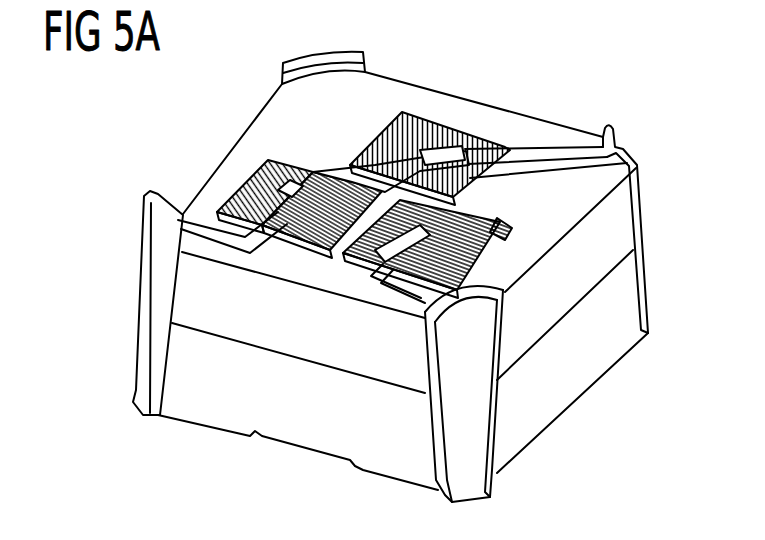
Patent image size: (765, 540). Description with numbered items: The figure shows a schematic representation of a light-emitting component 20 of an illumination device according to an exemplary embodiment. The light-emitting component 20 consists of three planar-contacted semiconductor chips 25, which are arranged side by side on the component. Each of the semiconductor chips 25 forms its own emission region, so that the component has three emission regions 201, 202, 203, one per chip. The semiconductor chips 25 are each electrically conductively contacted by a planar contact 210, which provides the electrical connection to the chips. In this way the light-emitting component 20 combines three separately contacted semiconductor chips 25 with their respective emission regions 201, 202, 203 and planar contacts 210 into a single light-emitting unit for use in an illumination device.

The light-emitting component 20 is at (120, 277).
The semiconductor chips 25 is at (393, 208).
The emission region 201 is at (437, 114).
The emission region 202 is at (283, 160).
The emission region 203 is at (503, 222).
The planar contact 210 is at (176, 206).